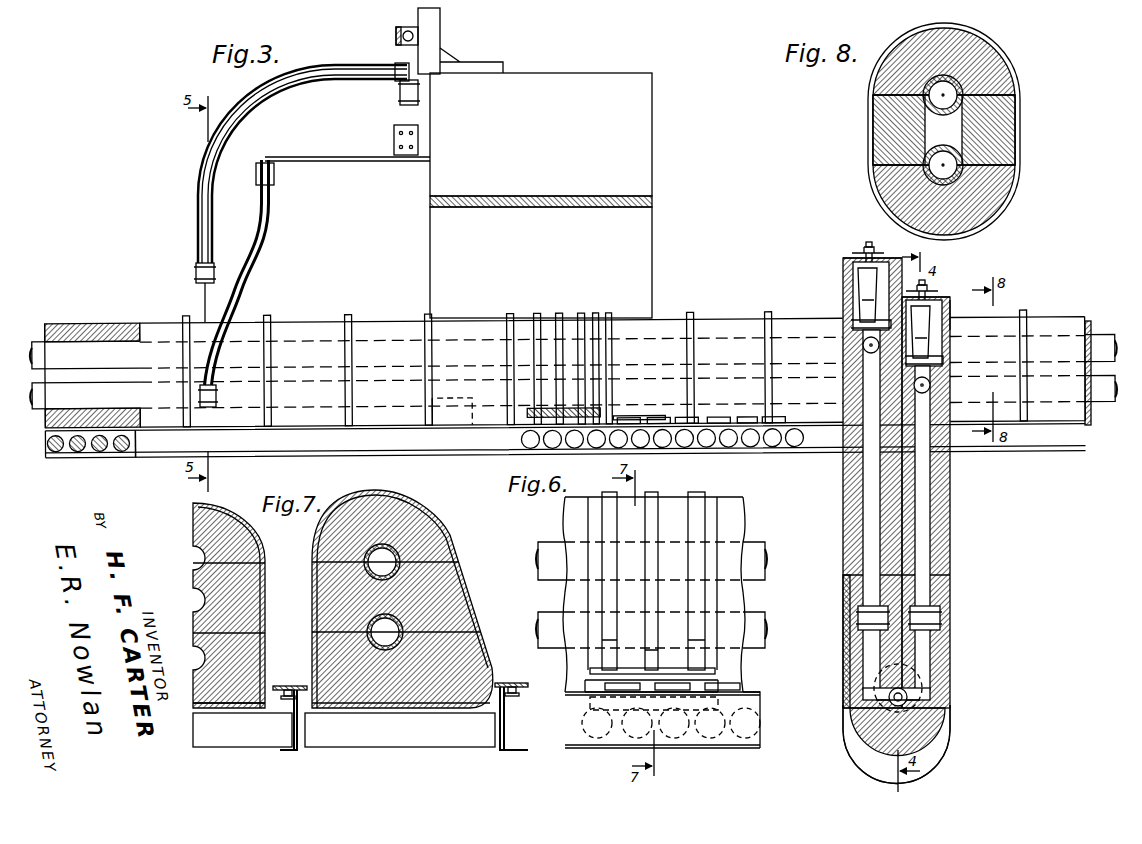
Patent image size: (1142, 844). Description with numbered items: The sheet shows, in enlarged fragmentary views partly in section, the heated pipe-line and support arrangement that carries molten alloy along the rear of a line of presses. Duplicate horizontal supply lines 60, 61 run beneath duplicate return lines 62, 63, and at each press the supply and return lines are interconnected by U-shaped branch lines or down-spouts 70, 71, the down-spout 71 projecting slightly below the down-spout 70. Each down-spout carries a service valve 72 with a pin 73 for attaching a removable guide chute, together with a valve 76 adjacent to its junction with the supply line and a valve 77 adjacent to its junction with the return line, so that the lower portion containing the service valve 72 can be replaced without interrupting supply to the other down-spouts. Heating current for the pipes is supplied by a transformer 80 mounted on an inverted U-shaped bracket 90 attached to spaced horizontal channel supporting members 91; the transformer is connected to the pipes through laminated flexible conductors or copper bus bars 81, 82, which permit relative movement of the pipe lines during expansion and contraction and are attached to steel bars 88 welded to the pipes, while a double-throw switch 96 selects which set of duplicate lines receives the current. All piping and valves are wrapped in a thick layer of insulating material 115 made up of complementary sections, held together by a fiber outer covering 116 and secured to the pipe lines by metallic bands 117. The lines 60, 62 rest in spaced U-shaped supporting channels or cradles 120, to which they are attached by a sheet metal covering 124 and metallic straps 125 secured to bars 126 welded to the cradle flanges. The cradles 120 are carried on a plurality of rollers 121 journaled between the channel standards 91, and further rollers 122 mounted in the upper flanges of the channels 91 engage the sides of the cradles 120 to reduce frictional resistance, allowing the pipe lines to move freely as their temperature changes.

In FIG. 3, the supply line 60 is at (105, 395).
In FIG. 8, the supply line 60 is at (1018, 168).
In FIG. 7, the supply line 60 is at (470, 612).
In FIG. 6, the supply line 60 is at (760, 628).
In FIG. 7, the supply line 61 is at (262, 620).
In FIG. 3, the return line 62 is at (65, 356).
In FIG. 8, the return line 62 is at (960, 86).
In FIG. 7, the return line 62 is at (400, 562).
In FIG. 6, the return line 62 is at (760, 580).
In FIG. 7, the return line 63 is at (240, 548).
In FIG. 3, the branch line 70 is at (933, 535).
In FIG. 3, the branch line 71 is at (948, 745).
In FIG. 3, the service valve 72 is at (908, 697).
In FIG. 3, the pin 73 is at (912, 683).
In FIG. 3, the valve 76 is at (955, 300).
In FIG. 3, the valve 77 is at (843, 302).
In FIG. 3, the transformer 80 is at (652, 132).
In FIG. 3, the flexible conductor 81 is at (282, 216).
In FIG. 3, the flexible conductor 82 is at (305, 80).
In FIG. 3, the steel bar 88 is at (205, 300).
In FIG. 3, the bracket 90 is at (652, 248).
In FIG. 3, the channel supporting member 91 is at (133, 455).
In FIG. 7, the channel supporting member 91 is at (296, 750).
In FIG. 6, the channel supporting member 91 is at (706, 748).
In FIG. 3, the double-throw switch 96 is at (396, 33).
In FIG. 3, the insulating material 115 is at (945, 595).
In FIG. 8, the insulating material 115 is at (878, 172).
In FIG. 7, the insulating material 115 is at (312, 600).
In FIG. 6, the insulating material 115 is at (740, 560).
In FIG. 8, the fiber outer covering 116 is at (876, 192).
In FIG. 3, the metallic band 117 is at (346, 315).
In FIG. 8, the metallic band 117 is at (870, 140).
In FIG. 3, the cradle 120 is at (545, 416).
In FIG. 7, the cradle 120 is at (497, 683).
In FIG. 6, the cradle 120 is at (718, 684).
In FIG. 3, the roller 121 is at (72, 452).
In FIG. 7, the roller 121 is at (238, 740).
In FIG. 6, the roller 121 is at (625, 738).
In FIG. 3, the roller 122 is at (712, 418).
In FIG. 7, the roller 122 is at (283, 690).
In FIG. 6, the roller 122 is at (672, 683).
In FIG. 7, the sheet metal covering 124 is at (468, 582).
In FIG. 6, the sheet metal covering 124 is at (720, 528).
In FIG. 7, the metallic strap 125 is at (462, 560).
In FIG. 6, the metallic strap 125 is at (702, 512).
In FIG. 7, the bar 126 is at (493, 655).
In FIG. 6, the bar 126 is at (715, 670).